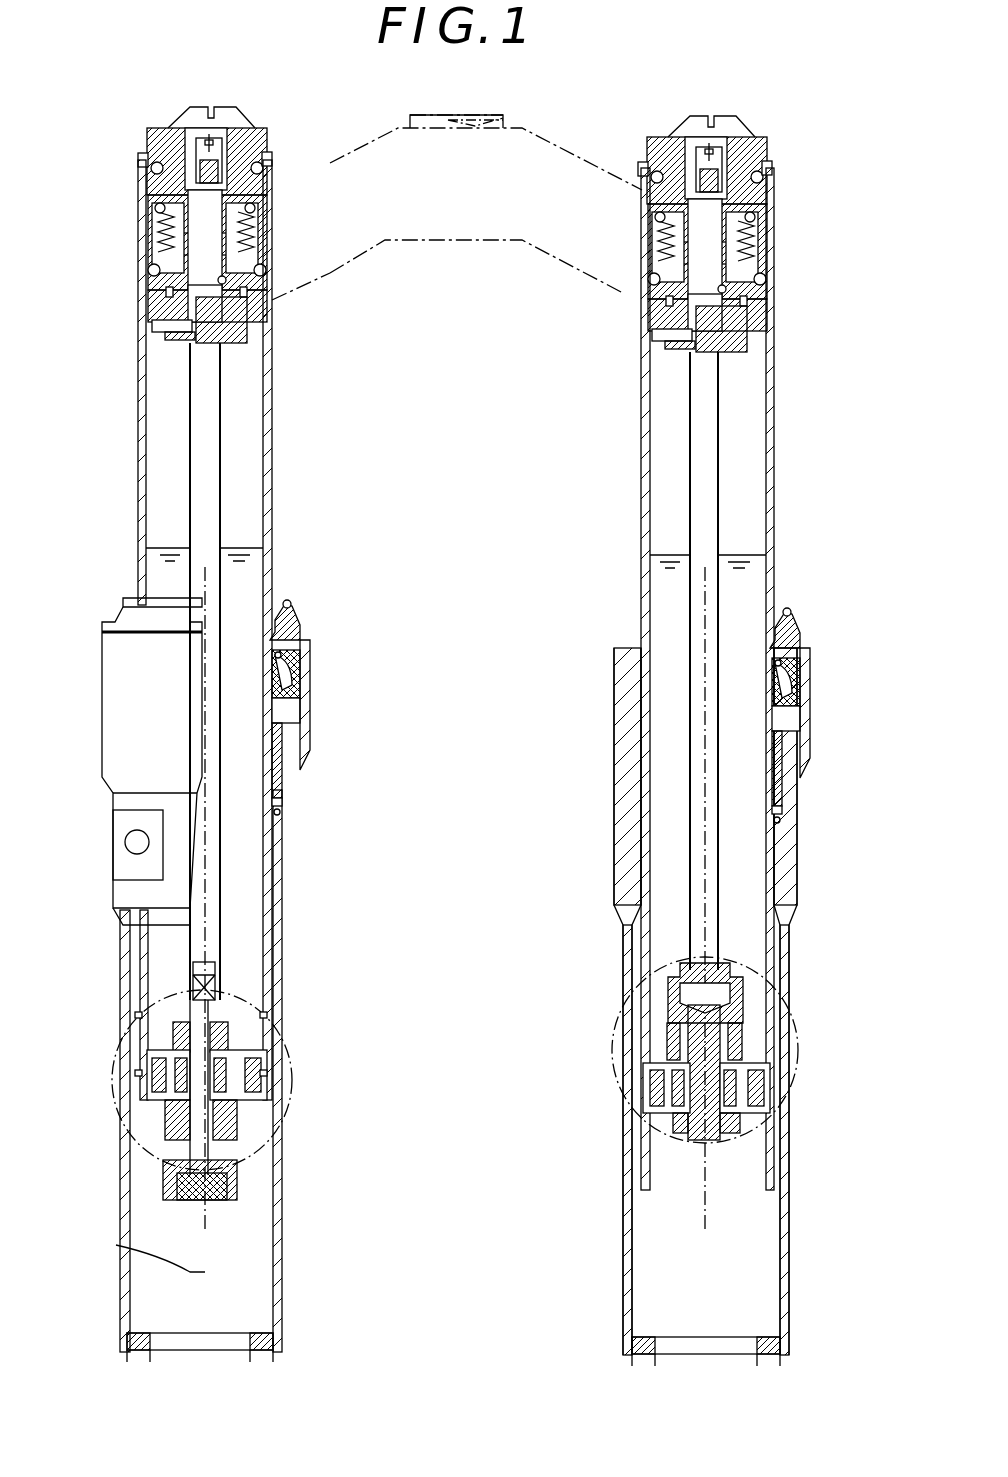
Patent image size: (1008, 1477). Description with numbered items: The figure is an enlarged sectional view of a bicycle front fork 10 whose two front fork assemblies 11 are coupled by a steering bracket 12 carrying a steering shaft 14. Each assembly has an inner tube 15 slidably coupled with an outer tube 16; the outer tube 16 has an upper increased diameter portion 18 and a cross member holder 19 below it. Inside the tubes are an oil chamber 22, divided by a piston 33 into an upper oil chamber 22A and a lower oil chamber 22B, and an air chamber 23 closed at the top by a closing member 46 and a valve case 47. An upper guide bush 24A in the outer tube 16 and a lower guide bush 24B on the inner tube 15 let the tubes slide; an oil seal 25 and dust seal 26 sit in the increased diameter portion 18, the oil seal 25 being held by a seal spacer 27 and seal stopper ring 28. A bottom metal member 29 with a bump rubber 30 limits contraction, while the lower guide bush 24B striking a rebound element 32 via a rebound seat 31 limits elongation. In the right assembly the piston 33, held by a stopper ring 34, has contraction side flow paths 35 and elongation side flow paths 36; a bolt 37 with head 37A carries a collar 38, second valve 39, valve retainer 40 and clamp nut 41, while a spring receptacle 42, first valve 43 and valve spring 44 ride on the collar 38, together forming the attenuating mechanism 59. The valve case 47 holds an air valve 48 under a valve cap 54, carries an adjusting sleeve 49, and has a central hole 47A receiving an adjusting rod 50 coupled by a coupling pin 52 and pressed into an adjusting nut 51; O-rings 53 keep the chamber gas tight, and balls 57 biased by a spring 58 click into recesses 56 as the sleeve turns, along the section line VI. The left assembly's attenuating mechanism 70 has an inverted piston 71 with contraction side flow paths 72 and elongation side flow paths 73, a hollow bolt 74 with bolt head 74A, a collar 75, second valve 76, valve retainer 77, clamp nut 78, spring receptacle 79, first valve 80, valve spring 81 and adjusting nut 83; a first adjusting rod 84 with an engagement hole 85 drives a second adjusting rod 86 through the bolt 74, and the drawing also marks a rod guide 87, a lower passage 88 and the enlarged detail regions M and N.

The front fork 10 is at (575, 148).
The front fork assembly 11 is at (135, 412).
The steering bracket 12 is at (348, 260).
The steering shaft 14 is at (410, 122).
The inner tube 15 is at (272, 415).
The outer tube 16 is at (283, 820).
The increased diameter portion 18 is at (302, 690).
The cross member holder 19 is at (112, 815).
The oil chamber 22 is at (160, 597).
The upper oil chamber 22A is at (496, 811).
The lower oil chamber 22B is at (492, 1261).
The air chamber 23 is at (452, 464).
The upper guide bush 24A is at (278, 745).
The lower guide bush 24B is at (138, 1040).
The oil seal 25 is at (288, 670).
The dust seal 26 is at (285, 615).
The seal spacer 27 is at (292, 705).
The seal stopper ring 28 is at (805, 665).
The bottom metal member 29 is at (273, 1355).
The bump rubber 30 is at (272, 1335).
The rebound seat 31 is at (780, 815).
The rebound element 32 is at (280, 780).
The piston 33 is at (672, 1095).
The stopper ring 34 is at (160, 1065).
The contraction side flow paths 35 is at (692, 1140).
The elongation side flow paths 36 is at (765, 1090).
The bolt 37 is at (710, 1140).
The head of bolt 37A is at (745, 965).
The collar 38 is at (680, 1055).
The second valve 39 is at (750, 1108).
The valve retainer 40 is at (745, 1125).
The clamp nut 41 is at (680, 1130).
The spring receptacle 42 is at (680, 985).
The first valve 43 is at (740, 1040).
The valve spring 44 is at (675, 1035).
The closing member 46 is at (150, 310).
The valve case 47 is at (242, 340).
The central hole of valve case 47A is at (242, 292).
The air valve 48 is at (240, 135).
The adjusting sleeve 49 is at (255, 210).
The adjusting rod 50 is at (775, 515).
The adjusting nut 51 is at (675, 960).
The coupling pin 52 is at (152, 328).
The O-rings 53 is at (262, 170).
The valve cap 54 is at (165, 120).
The recesses 56 is at (252, 235).
The balls 57 is at (160, 222).
The spring 58 is at (160, 245).
The attenuating mechanism 59 is at (755, 1000).
The attenuating mechanism 70 is at (230, 1002).
The piston 71 is at (240, 1105).
The contraction side flow paths 72 is at (170, 1090).
The elongation side flow paths 73 is at (230, 1075).
The bolt 74 is at (175, 1030).
The bolt head 74A is at (165, 1185).
The collar 75 is at (262, 1150).
The second valve 76 is at (265, 1065).
The valve retainer 77 is at (232, 1050).
The clamp nut 78 is at (228, 1030).
The spring receptacle 79 is at (178, 1135).
The first valve 80 is at (235, 1125).
The valve spring 81 is at (175, 1115).
The adjusting nut 83 is at (230, 1195).
The first adjusting rod 84 is at (222, 390).
The engagement hole 85 is at (210, 965).
The second adjusting rod 86 is at (178, 1022).
The check valve 87 is at (215, 975).
The passage 88 is at (212, 1200).
The damping valve unit M is at (610, 1020).
The damping valve unit N is at (300, 1075).
The section line VI is at (622, 327).